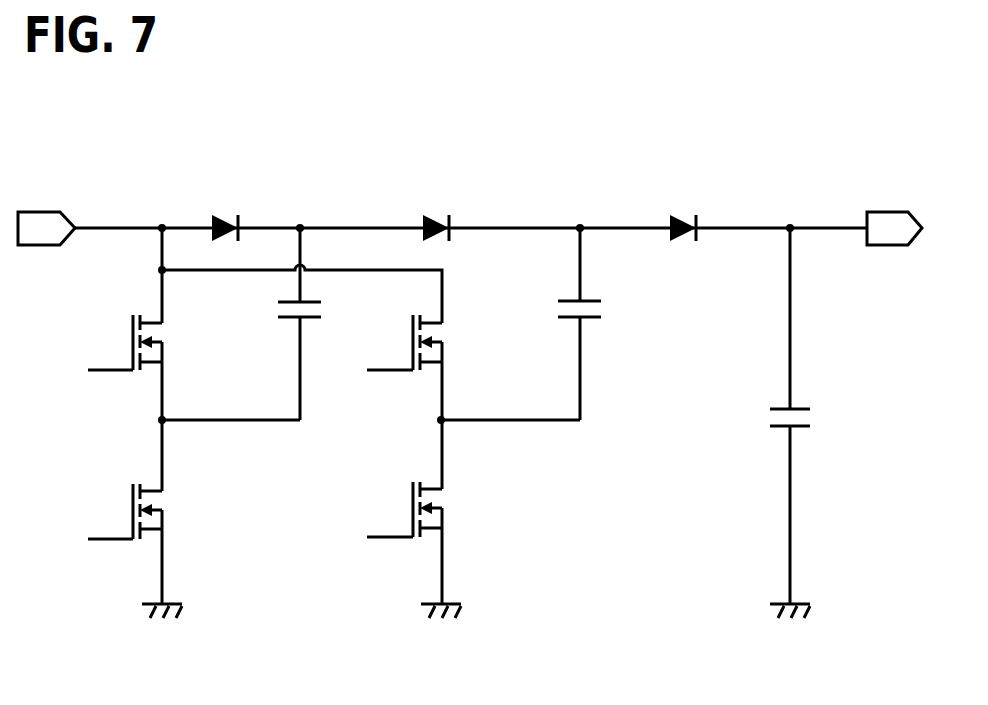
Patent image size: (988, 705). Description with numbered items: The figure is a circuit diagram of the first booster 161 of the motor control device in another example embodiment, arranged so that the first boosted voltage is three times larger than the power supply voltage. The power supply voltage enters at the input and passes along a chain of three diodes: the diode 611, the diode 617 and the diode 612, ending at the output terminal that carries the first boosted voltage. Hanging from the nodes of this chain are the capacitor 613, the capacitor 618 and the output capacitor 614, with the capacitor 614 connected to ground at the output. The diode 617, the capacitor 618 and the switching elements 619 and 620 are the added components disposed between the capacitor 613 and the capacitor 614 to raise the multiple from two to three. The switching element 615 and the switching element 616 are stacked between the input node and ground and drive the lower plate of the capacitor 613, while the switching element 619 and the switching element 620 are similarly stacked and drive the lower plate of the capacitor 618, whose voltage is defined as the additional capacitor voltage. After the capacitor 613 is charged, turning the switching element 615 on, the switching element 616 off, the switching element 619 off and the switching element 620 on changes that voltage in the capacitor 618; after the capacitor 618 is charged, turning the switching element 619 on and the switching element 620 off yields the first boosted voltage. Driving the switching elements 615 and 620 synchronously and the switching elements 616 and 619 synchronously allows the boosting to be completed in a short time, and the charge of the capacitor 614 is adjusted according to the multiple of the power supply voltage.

The first booster 161 is at (770, 105).
The diode 611 is at (216, 215).
The diode 617 is at (426, 215).
The diode 612 is at (673, 215).
The capacitor 613 is at (289, 320).
The capacitor 618 is at (567, 318).
The capacitor 614 is at (775, 408).
The switching element 615 is at (133, 337).
The switching element 616 is at (133, 506).
The switching element 619 is at (413, 335).
The switching element 620 is at (413, 504).